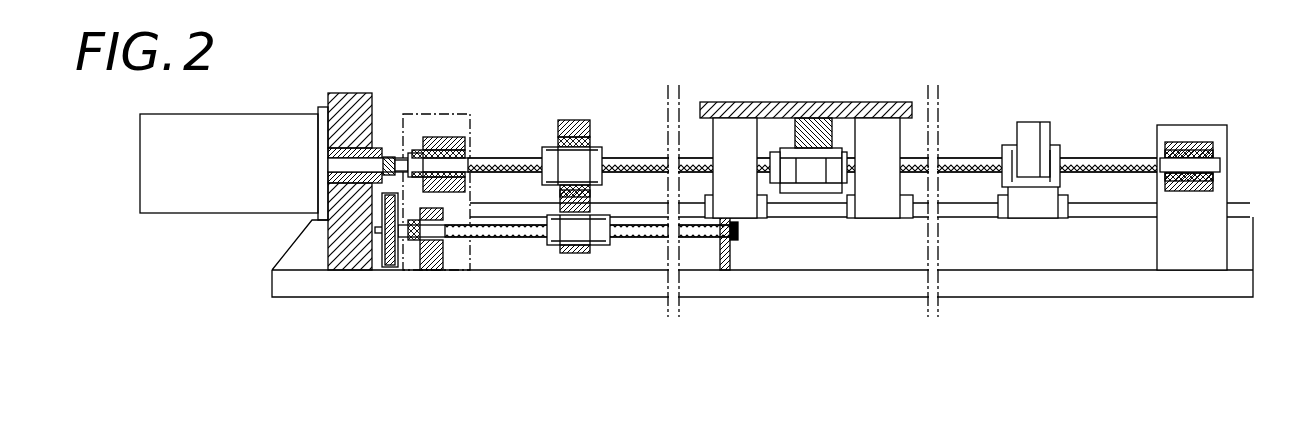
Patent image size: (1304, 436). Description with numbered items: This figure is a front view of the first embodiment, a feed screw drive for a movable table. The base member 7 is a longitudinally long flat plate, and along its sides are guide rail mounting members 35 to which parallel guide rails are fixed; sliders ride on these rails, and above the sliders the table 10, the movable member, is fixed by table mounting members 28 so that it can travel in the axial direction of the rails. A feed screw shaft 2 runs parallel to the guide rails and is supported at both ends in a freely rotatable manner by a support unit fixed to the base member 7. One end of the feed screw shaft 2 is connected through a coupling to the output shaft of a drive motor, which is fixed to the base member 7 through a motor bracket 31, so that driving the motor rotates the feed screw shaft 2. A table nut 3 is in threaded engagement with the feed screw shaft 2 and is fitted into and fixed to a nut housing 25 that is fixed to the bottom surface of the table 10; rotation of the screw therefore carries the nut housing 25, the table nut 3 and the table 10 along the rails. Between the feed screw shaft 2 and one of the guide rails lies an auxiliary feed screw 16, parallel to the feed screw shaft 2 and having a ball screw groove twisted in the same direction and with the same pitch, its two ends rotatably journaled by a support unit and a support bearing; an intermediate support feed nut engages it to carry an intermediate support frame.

The feed screw shaft 2 is at (626, 157).
The table nut 3 is at (818, 160).
The base member 7 is at (1082, 288).
The table 10 is at (871, 102).
The auxiliary feed screw 16 is at (520, 238).
The nut housing 25 is at (818, 118).
The table mounting member 28 is at (731, 132).
The motor bracket 31 is at (350, 100).
The guide rail mounting member 35 is at (878, 258).